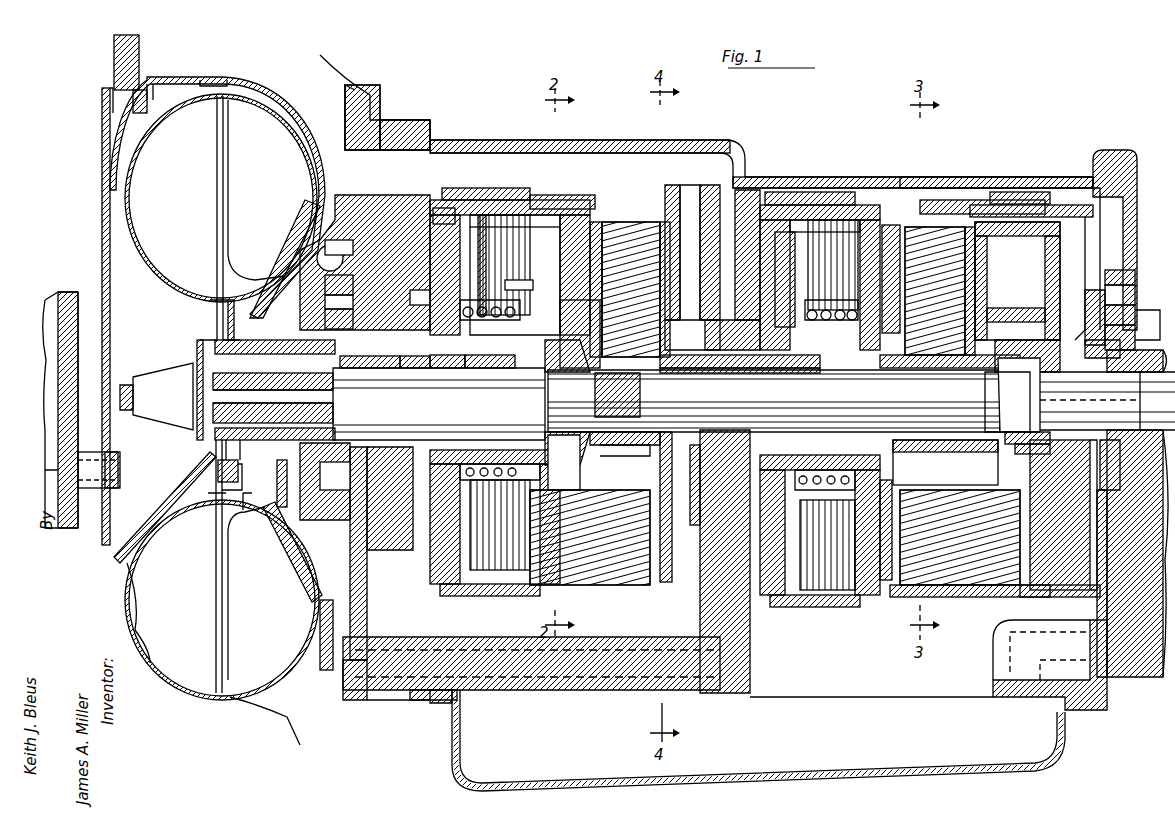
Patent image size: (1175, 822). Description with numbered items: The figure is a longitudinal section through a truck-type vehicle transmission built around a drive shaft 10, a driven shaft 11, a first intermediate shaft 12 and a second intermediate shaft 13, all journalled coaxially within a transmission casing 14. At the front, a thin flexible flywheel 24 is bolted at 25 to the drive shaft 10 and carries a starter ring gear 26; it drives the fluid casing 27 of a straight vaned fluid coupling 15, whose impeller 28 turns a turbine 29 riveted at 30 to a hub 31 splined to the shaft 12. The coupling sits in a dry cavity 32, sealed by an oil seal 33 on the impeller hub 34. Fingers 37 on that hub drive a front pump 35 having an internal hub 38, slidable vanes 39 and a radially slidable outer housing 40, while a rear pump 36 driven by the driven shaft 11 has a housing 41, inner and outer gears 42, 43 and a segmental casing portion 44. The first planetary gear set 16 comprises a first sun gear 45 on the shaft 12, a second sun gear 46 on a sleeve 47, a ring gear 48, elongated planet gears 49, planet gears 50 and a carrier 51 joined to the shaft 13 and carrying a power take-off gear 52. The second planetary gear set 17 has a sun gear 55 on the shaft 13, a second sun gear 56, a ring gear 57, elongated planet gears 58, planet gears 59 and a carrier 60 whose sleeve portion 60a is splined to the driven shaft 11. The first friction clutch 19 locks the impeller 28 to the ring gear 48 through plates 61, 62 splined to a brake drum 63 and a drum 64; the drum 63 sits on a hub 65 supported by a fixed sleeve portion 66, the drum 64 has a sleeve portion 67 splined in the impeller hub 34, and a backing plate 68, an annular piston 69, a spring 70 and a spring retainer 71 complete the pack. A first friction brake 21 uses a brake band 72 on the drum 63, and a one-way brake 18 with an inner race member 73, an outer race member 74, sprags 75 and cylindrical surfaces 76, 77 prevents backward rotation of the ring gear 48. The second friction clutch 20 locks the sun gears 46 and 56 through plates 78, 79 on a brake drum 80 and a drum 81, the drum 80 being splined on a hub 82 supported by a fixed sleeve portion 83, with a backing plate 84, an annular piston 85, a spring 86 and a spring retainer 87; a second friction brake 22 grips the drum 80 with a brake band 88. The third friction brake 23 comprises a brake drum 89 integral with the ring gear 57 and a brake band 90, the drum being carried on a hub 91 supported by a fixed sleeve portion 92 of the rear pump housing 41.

The drive shaft 10 is at (70, 330).
The driven shaft 11 is at (1150, 455).
The first intermediate shaft 12 is at (193, 368).
The second intermediate shaft 13 is at (772, 402).
The transmission casing 14 is at (425, 120).
The fluid coupling 15 is at (300, 115).
The first planetary gear set 16 is at (605, 215).
The second planetary gear set 17 is at (922, 225).
The one-way brake 18 is at (440, 425).
The first friction clutch 19 is at (530, 205).
The second friction clutch 20 is at (890, 225).
The first friction brake 21 is at (490, 200).
The second friction brake 22 is at (803, 190).
The third friction brake 23 is at (1050, 177).
The flywheel 24 is at (102, 135).
The bolt 25 is at (125, 470).
The starter ring gear 26 is at (114, 44).
The fluid casing 27 is at (235, 92).
The impeller 28 is at (256, 190).
The turbine 29 is at (221, 217).
The rivets 30 is at (218, 476).
The hub 31 is at (197, 432).
The cavity 32 is at (355, 123).
The oil seal 33 is at (270, 350).
The impeller hub 34 is at (270, 395).
The front pump 35 is at (308, 262).
The rear pump 36 is at (1100, 280).
The tabs or fingers 37 is at (370, 376).
The internal hub 38 is at (352, 300).
The vanes 39 is at (325, 300).
The outer housing 40 is at (352, 272).
The rear pump housing 41 is at (1085, 290).
The inner gear 42 is at (1135, 285).
The outer gear 43 is at (1140, 345).
The segmental casing portion 44 is at (1132, 310).
The first sun gear 45 is at (565, 300).
The second sun gear 46 is at (632, 448).
The sleeve 47 is at (765, 374).
The ring gear 48 is at (568, 195).
The elongated planet gears 49 is at (625, 580).
The planet gears 50 is at (640, 210).
The planet gear carrier 51 is at (590, 478).
The power take-off gear 52 is at (690, 182).
The sun gear 55 is at (1012, 308).
The second sun gear 56 is at (930, 450).
The ring gear 57 is at (960, 212).
The elongated planet gears 58 is at (900, 590).
The planet gears 59 is at (930, 343).
The planet gear carrier 60 is at (1000, 240).
The sleeve portion 60a is at (1022, 386).
The clutch plates 61 is at (455, 205).
The clutch plates 62 is at (500, 270).
The brake drum 63 is at (428, 204).
The drum 64 is at (525, 288).
The hub 65 is at (490, 368).
The fixed sleeve portion 66 is at (447, 368).
The sleeve portion 67 is at (412, 368).
The backing plate 68 is at (505, 248).
The annular piston 69 is at (440, 245).
The spring 70 is at (470, 300).
The spring retainer 71 is at (575, 455).
The brake band 72 is at (512, 188).
The inner race member 73 is at (353, 320).
The outer race member 74 is at (395, 520).
The sprags 75 is at (400, 480).
The cylindrical surface 76 is at (470, 490).
The cylindrical surface 77 is at (410, 297).
The clutch plates 78 is at (835, 215).
The clutch plates 79 is at (810, 300).
The brake drum 80 is at (745, 210).
The drum 81 is at (800, 305).
The hub 82 is at (718, 370).
The fixed sleeve portion 83 is at (668, 385).
The backing plate 84 is at (895, 288).
The annular piston 85 is at (775, 250).
The spring 86 is at (800, 495).
The spring retainer 87 is at (880, 480).
The brake band 88 is at (782, 192).
The brake drum 89 is at (990, 205).
The brake band 90 is at (1010, 192).
The hub 91 is at (1028, 432).
The fixed sleeve portion 92 is at (1032, 444).